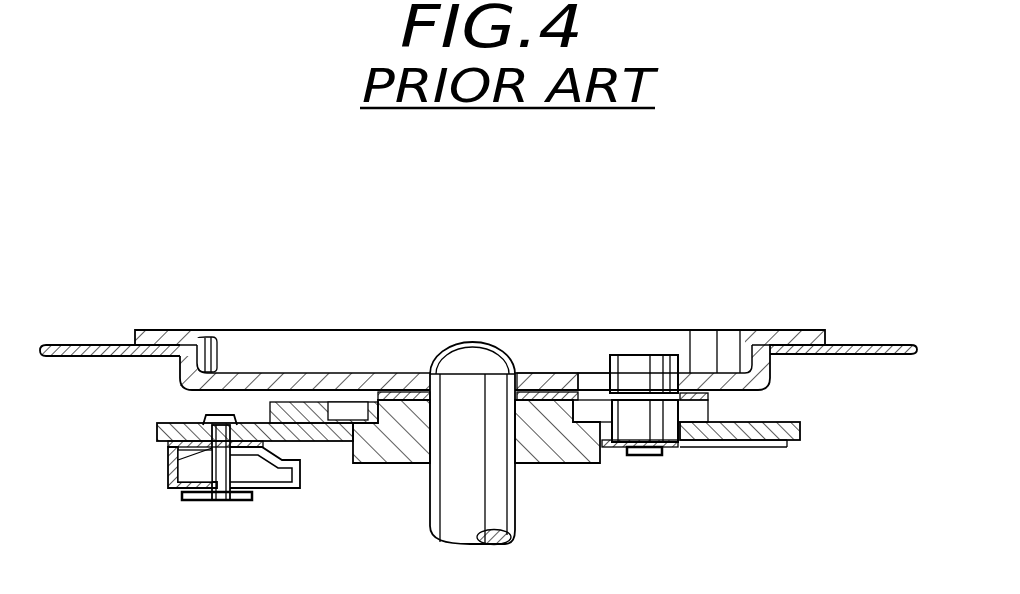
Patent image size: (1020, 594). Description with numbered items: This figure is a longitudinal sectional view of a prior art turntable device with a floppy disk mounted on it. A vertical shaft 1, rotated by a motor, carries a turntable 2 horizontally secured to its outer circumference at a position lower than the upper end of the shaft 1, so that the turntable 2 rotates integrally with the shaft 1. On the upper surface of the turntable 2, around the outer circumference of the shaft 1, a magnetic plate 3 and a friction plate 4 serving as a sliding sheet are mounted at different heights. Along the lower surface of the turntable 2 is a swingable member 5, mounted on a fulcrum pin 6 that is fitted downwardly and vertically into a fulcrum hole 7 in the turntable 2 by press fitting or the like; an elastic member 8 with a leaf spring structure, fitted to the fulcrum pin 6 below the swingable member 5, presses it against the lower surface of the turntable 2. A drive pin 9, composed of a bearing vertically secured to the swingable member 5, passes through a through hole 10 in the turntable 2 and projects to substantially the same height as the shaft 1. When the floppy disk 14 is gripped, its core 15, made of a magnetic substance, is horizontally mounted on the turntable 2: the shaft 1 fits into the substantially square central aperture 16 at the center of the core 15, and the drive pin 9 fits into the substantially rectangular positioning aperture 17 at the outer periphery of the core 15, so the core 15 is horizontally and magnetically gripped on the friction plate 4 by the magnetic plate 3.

The shaft 1 is at (472, 343).
The turntable 2 is at (258, 423).
The magnetic plate 3 is at (328, 402).
The friction plate 4 is at (395, 392).
The swingable member 5 is at (168, 447).
The fulcrum pin 6 is at (222, 498).
The fulcrum hole 7 is at (168, 478).
The elastic member 8 is at (173, 490).
The drive pin 9 is at (660, 355).
The through hole 10 is at (672, 455).
The floppy disk 14 is at (112, 345).
The core 15 is at (217, 335).
The central aperture 16 is at (530, 373).
The positioning aperture 17 is at (600, 373).